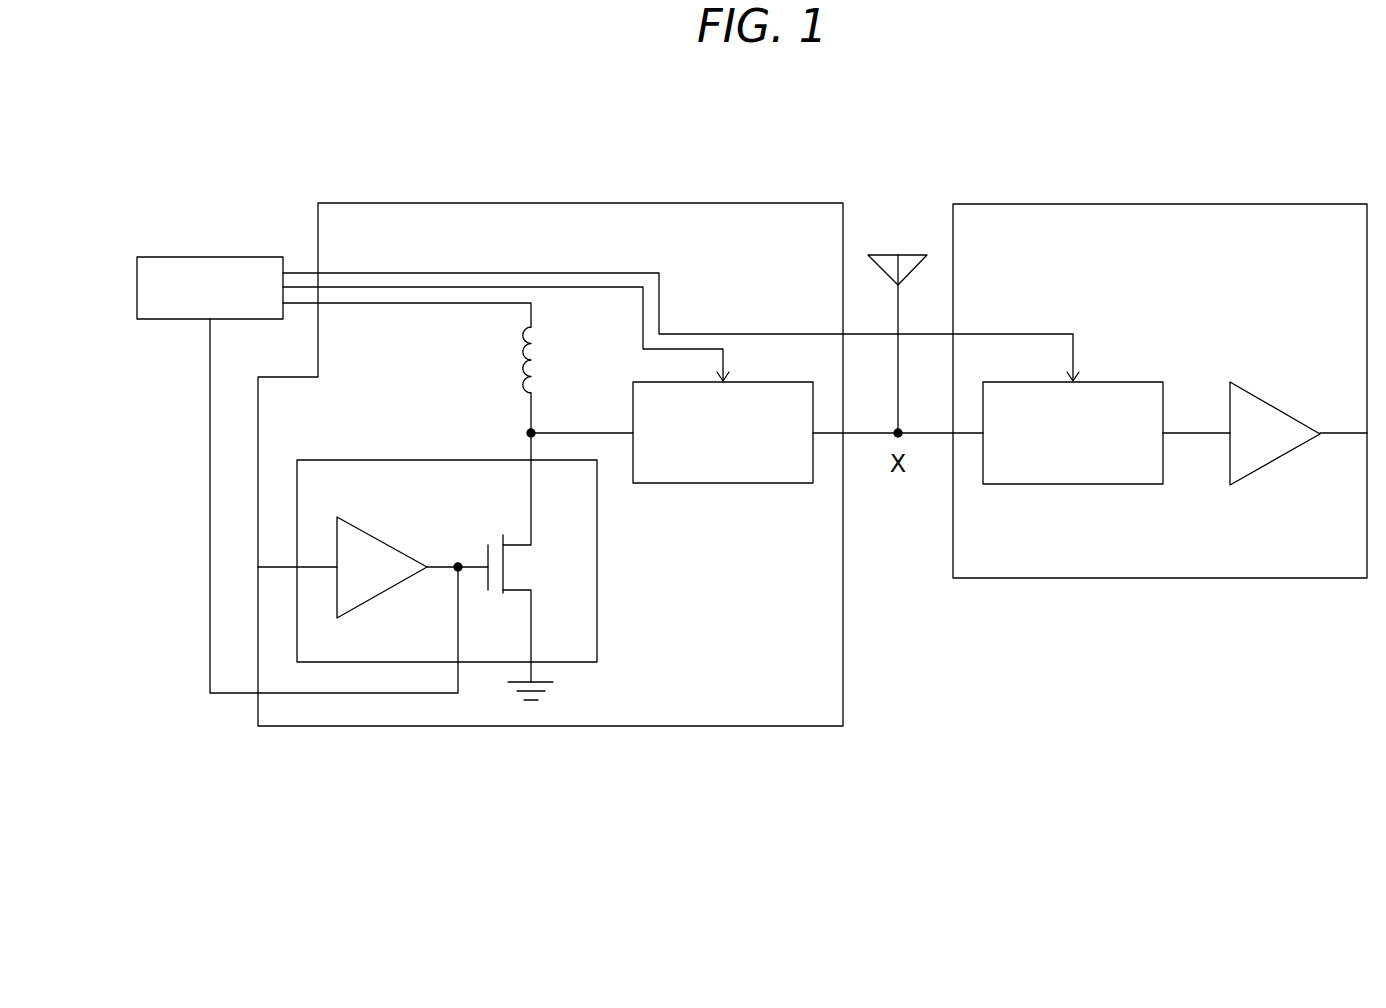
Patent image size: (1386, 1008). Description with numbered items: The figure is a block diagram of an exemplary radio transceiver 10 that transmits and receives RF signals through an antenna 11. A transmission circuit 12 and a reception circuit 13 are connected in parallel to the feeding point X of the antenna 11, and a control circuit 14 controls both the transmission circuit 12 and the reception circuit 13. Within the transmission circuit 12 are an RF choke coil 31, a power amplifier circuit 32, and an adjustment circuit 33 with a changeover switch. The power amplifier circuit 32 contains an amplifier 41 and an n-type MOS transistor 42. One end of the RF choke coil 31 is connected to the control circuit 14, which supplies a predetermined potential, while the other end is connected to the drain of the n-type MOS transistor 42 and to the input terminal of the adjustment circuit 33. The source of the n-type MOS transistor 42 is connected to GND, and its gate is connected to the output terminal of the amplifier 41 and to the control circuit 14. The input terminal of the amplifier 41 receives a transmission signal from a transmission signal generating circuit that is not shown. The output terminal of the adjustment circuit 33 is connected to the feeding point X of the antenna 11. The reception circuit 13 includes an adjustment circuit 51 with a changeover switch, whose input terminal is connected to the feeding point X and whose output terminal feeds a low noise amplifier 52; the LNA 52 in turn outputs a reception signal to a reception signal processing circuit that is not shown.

The radio transceiver 10 is at (924, 737).
The antenna 11 is at (904, 255).
The transmission circuit 12 is at (549, 203).
The reception circuit 13 is at (1157, 204).
The control circuit 14 is at (211, 257).
The RF choke coil 31 is at (538, 341).
The power amplifier circuit 32 is at (407, 460).
The adjustment circuit with changeover switch 33 is at (722, 484).
The amplifier 41 is at (390, 590).
The n-type MOS transistor 42 is at (511, 592).
The adjustment circuit with changeover switch 51 is at (1072, 485).
The low noise amplifier (LNA) 52 is at (1277, 405).